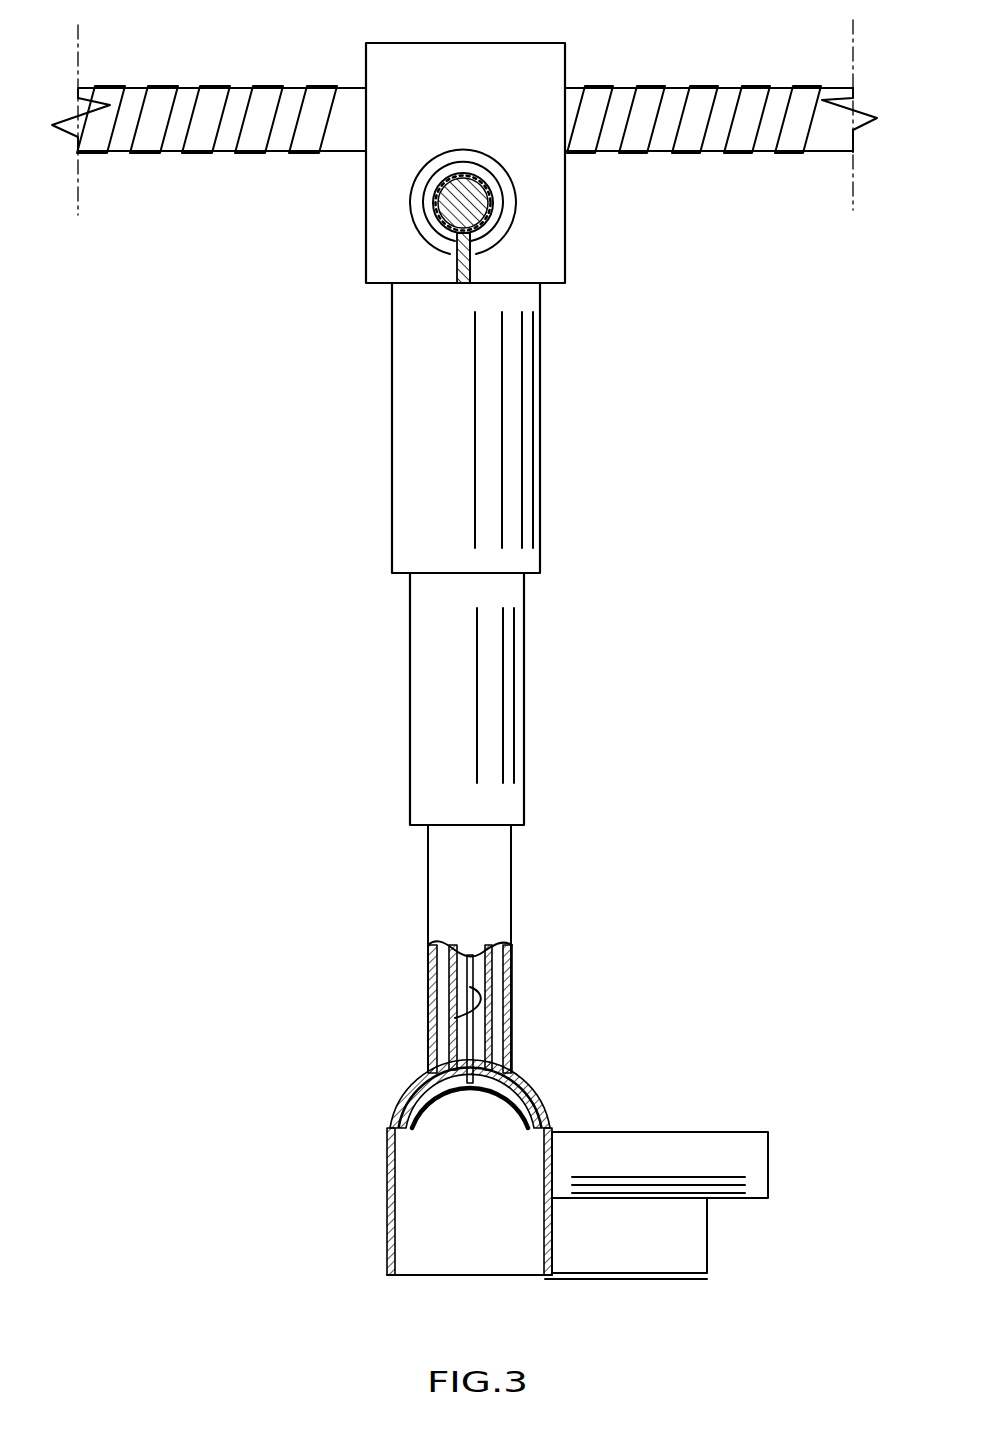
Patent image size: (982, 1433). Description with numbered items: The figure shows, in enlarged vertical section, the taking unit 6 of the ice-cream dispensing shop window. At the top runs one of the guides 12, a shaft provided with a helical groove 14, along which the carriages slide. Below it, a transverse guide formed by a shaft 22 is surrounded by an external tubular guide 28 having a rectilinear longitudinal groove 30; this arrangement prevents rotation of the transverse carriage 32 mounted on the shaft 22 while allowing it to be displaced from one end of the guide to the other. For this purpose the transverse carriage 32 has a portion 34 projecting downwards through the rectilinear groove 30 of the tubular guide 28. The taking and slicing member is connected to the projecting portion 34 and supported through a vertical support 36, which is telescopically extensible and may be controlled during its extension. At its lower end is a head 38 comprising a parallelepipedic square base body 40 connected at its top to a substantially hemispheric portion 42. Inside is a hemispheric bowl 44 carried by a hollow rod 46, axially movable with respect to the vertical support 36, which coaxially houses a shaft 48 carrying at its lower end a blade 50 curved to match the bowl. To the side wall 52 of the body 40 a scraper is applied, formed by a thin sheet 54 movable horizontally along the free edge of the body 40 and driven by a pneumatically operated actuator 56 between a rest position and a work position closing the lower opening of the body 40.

The taking unit 6 is at (541, 478).
The guide 12 is at (657, 97).
The helical groove 14 is at (732, 97).
The shaft 22 is at (493, 201).
The external tubular guide 28 is at (425, 193).
The rectilinear longitudinal groove 30 is at (456, 265).
The transverse carriage 32 is at (516, 43).
The projecting portion 34 is at (471, 274).
The vertical support 36 is at (411, 700).
The head 38 is at (612, 1122).
The parallelepipedic square base body 40 is at (387, 1197).
The hemispheric portion 42 is at (412, 1090).
The hemispheric bowl 44 is at (388, 1120).
The hollow rod 46 is at (450, 976).
The shaft 48 is at (470, 967).
The blade 50 is at (530, 1090).
The side wall 52 is at (544, 1240).
The thin sheet 54 is at (708, 1241).
The actuator 56 is at (655, 1131).